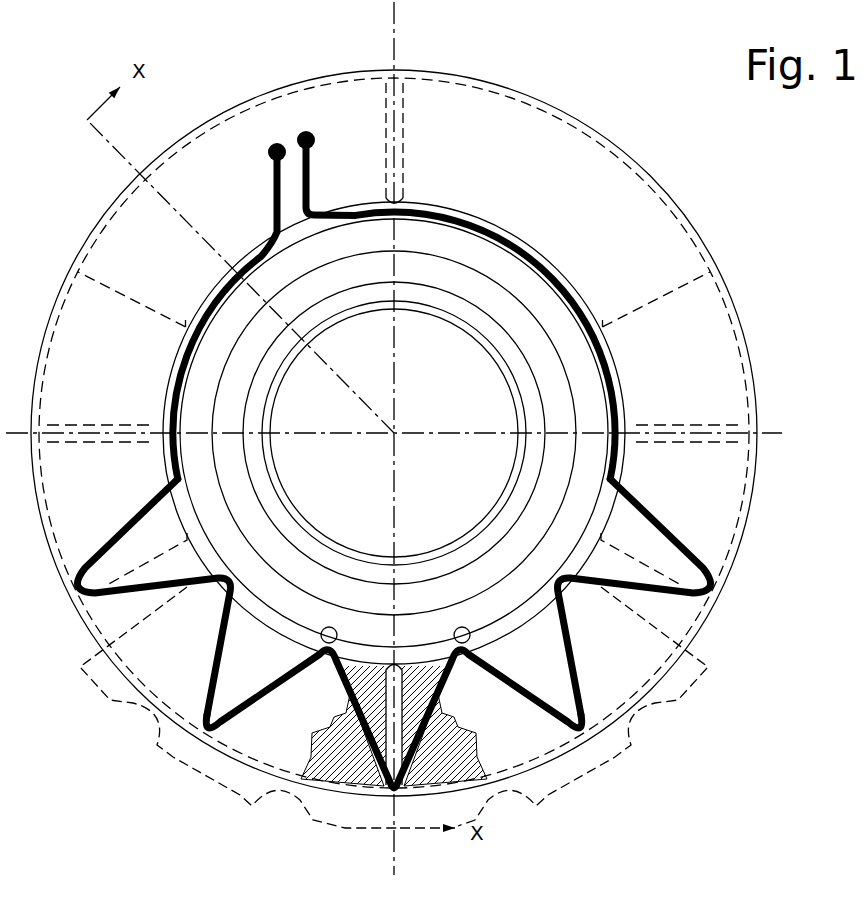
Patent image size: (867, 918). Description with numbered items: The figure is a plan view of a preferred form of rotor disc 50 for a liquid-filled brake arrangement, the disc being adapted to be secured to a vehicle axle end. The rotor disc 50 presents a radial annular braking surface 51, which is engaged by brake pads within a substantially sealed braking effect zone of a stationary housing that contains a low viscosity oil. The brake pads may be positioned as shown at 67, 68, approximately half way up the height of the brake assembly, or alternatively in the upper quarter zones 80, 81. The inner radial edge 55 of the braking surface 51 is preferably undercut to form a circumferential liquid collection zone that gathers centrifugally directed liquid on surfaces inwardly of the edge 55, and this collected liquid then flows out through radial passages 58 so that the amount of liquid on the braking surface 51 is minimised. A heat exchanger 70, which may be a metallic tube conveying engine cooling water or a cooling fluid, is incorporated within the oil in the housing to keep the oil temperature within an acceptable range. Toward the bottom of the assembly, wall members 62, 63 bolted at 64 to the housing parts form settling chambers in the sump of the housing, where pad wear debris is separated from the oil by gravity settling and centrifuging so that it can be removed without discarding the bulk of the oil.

The rotor disc 50 is at (578, 178).
The braking surface 51 is at (628, 227).
The inner radial edge 55 is at (199, 709).
The radial passage 58 is at (404, 103).
The wall member 62 is at (240, 797).
The wall member 63 is at (583, 706).
The bolt 64 is at (267, 632).
The brake pad position 67 is at (687, 597).
The brake pad position 68 is at (96, 597).
The heat exchanger 70 is at (209, 313).
The upper quarter zone 80 is at (237, 190).
The upper quarter zone 81 is at (522, 193).